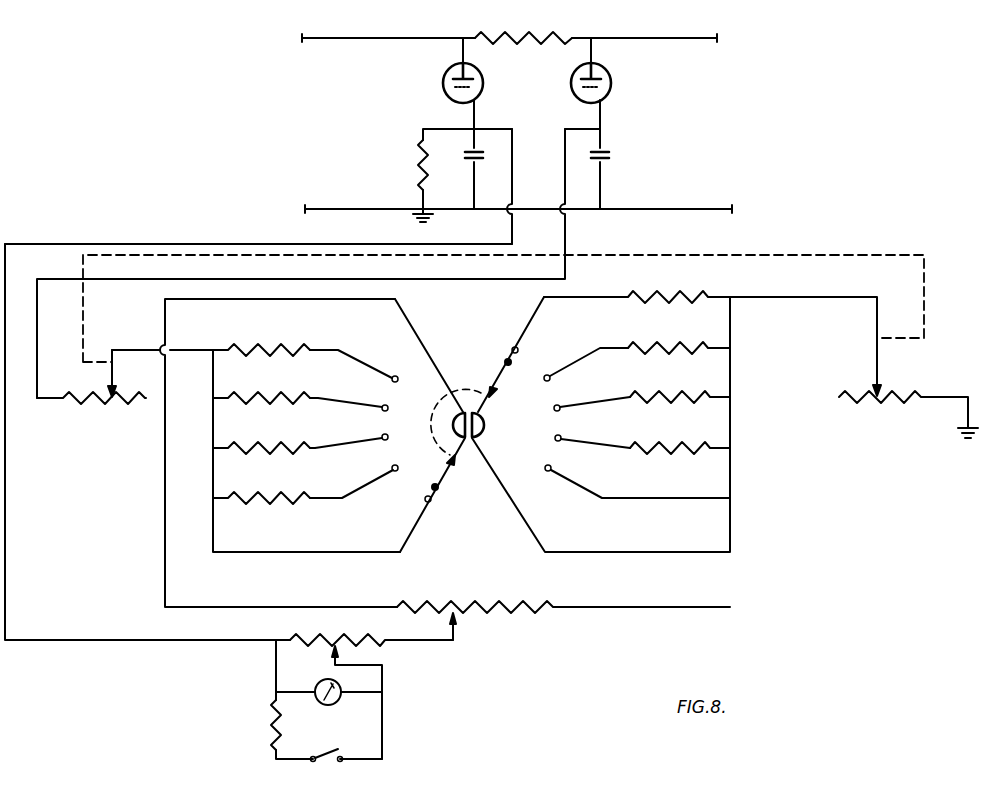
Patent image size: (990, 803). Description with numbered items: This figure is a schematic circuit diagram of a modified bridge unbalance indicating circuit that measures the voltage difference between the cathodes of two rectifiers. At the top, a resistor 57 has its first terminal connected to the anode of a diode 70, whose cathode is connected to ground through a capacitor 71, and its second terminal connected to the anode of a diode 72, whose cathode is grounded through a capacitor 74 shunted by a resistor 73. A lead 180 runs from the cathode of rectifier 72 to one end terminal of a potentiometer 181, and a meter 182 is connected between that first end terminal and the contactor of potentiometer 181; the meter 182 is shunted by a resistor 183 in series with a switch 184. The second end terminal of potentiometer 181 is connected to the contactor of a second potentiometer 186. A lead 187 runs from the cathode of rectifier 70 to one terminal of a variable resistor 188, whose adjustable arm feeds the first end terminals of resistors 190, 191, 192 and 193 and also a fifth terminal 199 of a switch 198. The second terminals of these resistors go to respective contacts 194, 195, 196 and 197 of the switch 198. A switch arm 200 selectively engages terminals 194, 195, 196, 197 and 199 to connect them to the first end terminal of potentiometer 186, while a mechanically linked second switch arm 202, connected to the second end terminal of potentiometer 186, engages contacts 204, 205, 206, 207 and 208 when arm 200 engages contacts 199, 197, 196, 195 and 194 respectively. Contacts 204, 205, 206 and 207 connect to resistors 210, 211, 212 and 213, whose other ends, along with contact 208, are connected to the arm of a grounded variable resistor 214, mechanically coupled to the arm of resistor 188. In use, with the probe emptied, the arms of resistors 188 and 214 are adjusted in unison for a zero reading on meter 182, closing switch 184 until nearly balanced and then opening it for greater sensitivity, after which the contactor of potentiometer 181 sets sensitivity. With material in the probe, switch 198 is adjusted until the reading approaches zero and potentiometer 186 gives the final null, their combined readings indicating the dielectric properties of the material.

The resistor 57 is at (530, 33).
The diode 70 is at (611, 88).
The capacitor 71 is at (611, 155).
The diode 72 is at (442, 86).
The resistor 73 is at (418, 160).
The capacitor 74 is at (466, 157).
The lead 180 is at (106, 244).
The potentiometer 181 is at (333, 634).
The meter 182 is at (322, 681).
The resistor 183 is at (270, 718).
The switch 184 is at (324, 750).
The second potentiometer 186 is at (498, 605).
The lead 187 is at (567, 252).
The variable resistor 188 is at (82, 403).
The resistor 190 is at (262, 348).
The resistor 191 is at (262, 397).
The resistor 192 is at (263, 447).
The resistor 193 is at (264, 497).
The contact 194 is at (389, 381).
The contact 195 is at (381, 411).
The contact 196 is at (381, 447).
The contact 197 is at (397, 474).
The switch 198 is at (474, 452).
The terminal 199 is at (424, 502).
The switch arm 200 is at (447, 471).
The second switch arm 202 is at (498, 376).
The contact 204 is at (519, 351).
The contact 205 is at (541, 383).
The contact 206 is at (560, 404).
The contact 207 is at (561, 436).
The contact 208 is at (552, 467).
The resistor 210 is at (668, 293).
The resistor 211 is at (663, 347).
The resistor 212 is at (662, 396).
The resistor 213 is at (663, 447).
The variable resistor 214 is at (858, 403).